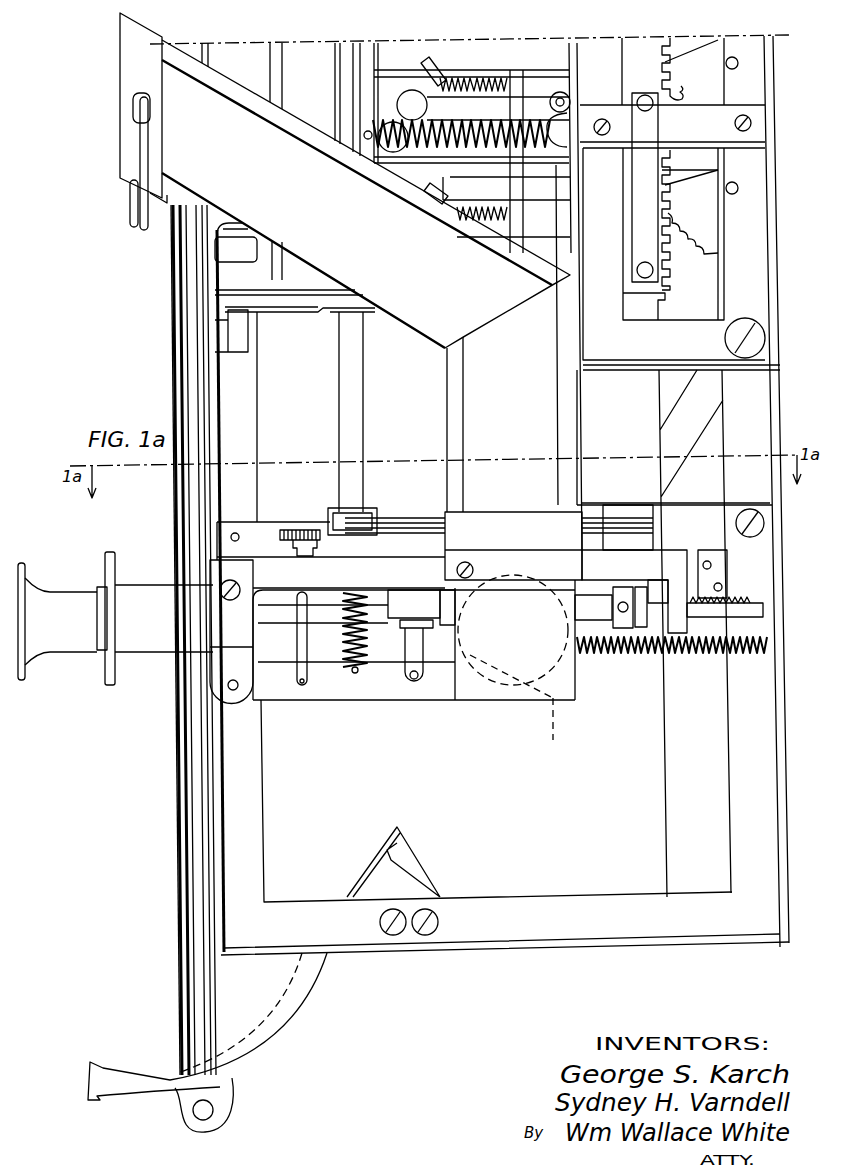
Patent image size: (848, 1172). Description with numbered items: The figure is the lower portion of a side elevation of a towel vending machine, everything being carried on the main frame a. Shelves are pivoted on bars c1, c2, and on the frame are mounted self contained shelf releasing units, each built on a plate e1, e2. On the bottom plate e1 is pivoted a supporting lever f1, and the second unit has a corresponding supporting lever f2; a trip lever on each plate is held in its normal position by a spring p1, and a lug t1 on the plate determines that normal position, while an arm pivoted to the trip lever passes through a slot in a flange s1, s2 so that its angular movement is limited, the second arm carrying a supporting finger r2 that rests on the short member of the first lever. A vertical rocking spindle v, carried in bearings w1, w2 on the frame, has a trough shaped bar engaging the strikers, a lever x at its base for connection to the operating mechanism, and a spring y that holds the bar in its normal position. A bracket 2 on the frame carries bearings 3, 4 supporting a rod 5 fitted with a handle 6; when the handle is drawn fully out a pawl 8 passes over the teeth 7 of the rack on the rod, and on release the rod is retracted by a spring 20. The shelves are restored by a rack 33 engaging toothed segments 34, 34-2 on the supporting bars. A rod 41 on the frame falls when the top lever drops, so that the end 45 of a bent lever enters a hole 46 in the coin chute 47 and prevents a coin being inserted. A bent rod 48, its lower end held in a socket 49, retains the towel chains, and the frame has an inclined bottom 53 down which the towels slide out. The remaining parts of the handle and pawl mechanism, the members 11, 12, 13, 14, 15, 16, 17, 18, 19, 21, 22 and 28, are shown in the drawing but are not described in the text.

The bracket 2 is at (298, 572).
The bearing 3 is at (150, 632).
The bearing 4 is at (680, 624).
The rod 5 is at (598, 612).
The handle 6 is at (65, 635).
The teeth 7 is at (740, 608).
The pawl 8 is at (653, 605).
The block with pin 11 is at (637, 630).
The bracket 12 is at (225, 668).
The spring 13 is at (347, 700).
The dashed link 14 is at (538, 660).
The pawl arm 15 is at (421, 655).
The pawl head 16 is at (395, 680).
The block 17 is at (430, 608).
The lever 18 is at (300, 700).
The wheel (hidden) 19 is at (505, 665).
The spring 20 is at (678, 655).
The hidden link 21 is at (555, 732).
The thumb screw 22 is at (300, 530).
The block 28 is at (618, 505).
The rack 33 is at (700, 72).
The toothed segment 34 is at (710, 225).
The toothed segment 34-2 is at (710, 80).
The rod 41 is at (270, 80).
The end of bent lever 45 is at (148, 107).
The hole 46 is at (134, 100).
The chute 47 is at (128, 137).
The bent rod 48 is at (174, 382).
The socket 49 is at (213, 1110).
The inclined bottom 53 is at (100, 1063).
The main frame a is at (162, 640).
The bar c1 is at (739, 188).
The bar c2 is at (739, 63).
The plate e1 is at (431, 183).
The plate e2 is at (418, 65).
The supporting lever f1 is at (366, 276).
The supporting lever f2 is at (503, 100).
The spring p1 is at (505, 207).
The supporting finger r2 is at (570, 101).
The flange s1 is at (512, 214).
The flange s2 is at (527, 108).
The lug t1 is at (487, 186).
The rocking spindle v is at (347, 390).
The bearing w1 is at (357, 513).
The bearing w2 is at (347, 300).
The lever x is at (352, 533).
The spring y is at (467, 120).